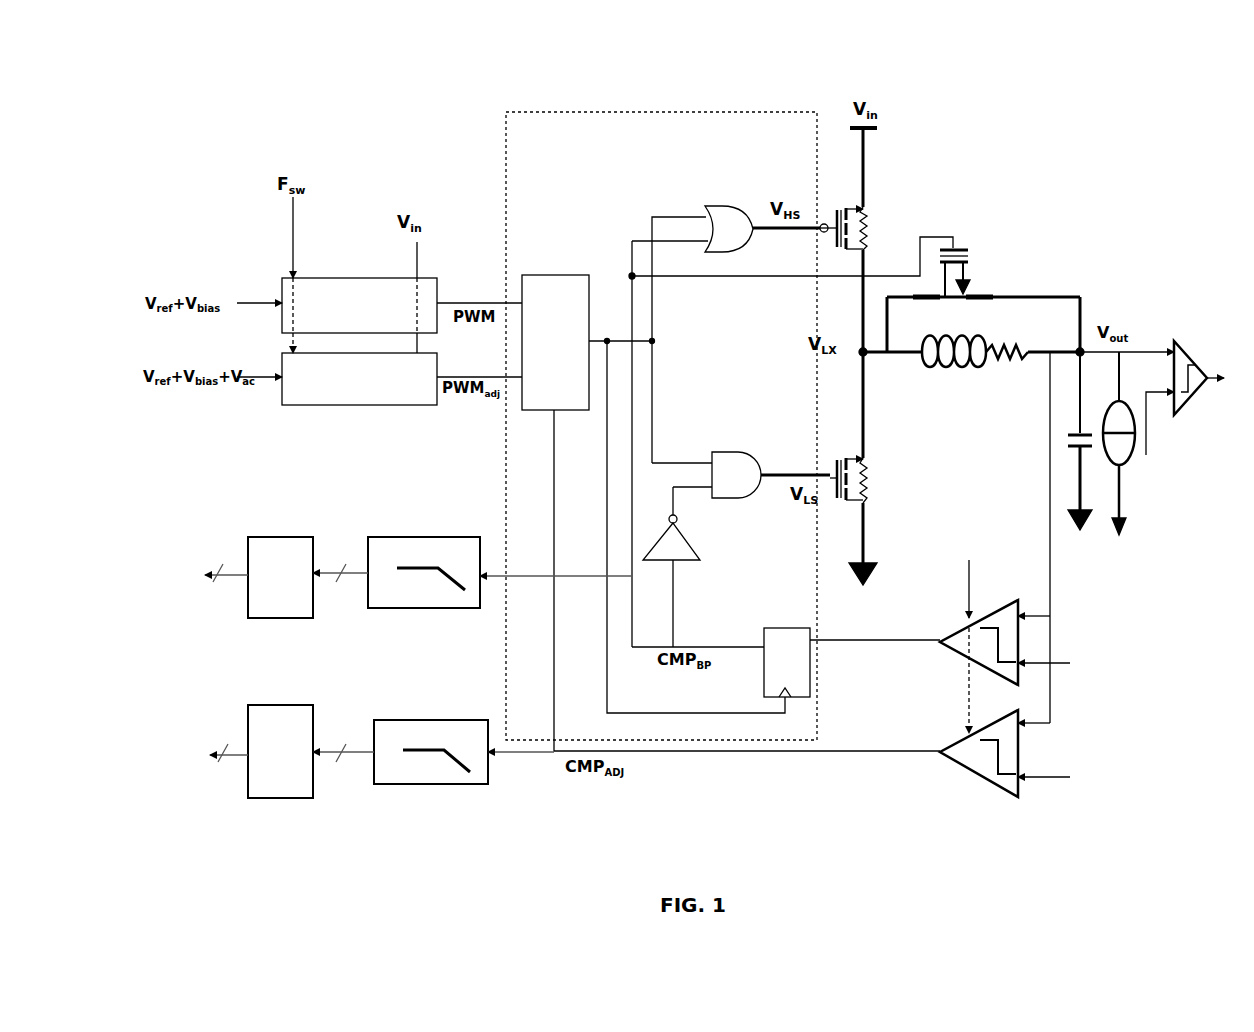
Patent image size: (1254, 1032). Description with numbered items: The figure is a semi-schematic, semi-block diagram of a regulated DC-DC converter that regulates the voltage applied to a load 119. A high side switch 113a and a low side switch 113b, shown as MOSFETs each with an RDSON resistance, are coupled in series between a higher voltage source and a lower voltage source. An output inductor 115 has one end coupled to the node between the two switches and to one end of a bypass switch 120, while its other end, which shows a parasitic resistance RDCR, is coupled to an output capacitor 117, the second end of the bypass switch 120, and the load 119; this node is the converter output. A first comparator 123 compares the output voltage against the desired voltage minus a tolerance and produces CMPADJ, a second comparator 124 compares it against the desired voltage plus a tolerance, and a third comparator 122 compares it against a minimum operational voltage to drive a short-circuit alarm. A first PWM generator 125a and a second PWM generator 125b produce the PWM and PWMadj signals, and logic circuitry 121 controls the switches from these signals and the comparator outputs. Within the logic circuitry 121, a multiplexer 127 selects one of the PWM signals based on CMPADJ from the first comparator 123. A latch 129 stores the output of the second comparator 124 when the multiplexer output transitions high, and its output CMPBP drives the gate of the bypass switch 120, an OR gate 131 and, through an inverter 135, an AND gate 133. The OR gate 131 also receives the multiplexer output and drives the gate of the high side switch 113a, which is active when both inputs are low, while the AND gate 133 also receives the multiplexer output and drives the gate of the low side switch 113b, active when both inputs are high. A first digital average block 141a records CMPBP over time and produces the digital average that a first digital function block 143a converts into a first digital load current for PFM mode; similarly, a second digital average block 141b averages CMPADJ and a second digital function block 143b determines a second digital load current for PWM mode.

The logic circuitry 121 is at (692, 112).
The first pulse-width modulation generator 125a is at (313, 278).
The second PWM generator 125b is at (300, 405).
The multiplexer 127 is at (548, 272).
The OR gate 131 is at (733, 252).
The AND gate 133 is at (733, 452).
The inverter 135 is at (715, 548).
The latch 129 is at (775, 628).
The high side switch 113a is at (840, 207).
The low side switch 113b is at (840, 457).
The bypass switch 120 is at (958, 248).
The output inductor 115 is at (976, 375).
The output capacitor 117 is at (1073, 450).
The load 119 is at (1129, 402).
The third comparator 122 is at (1190, 364).
The second comparator 124 is at (990, 610).
The first comparator 123 is at (966, 778).
The first digital average block 141a is at (417, 537).
The second digital average block 141b is at (413, 720).
The first digital function block 143a is at (283, 537).
The second digital function block 143b is at (282, 705).